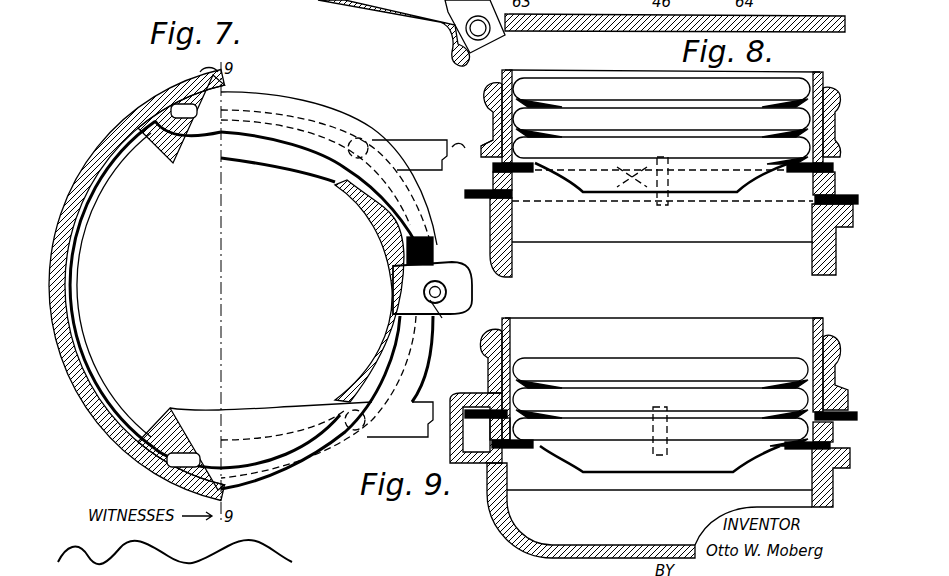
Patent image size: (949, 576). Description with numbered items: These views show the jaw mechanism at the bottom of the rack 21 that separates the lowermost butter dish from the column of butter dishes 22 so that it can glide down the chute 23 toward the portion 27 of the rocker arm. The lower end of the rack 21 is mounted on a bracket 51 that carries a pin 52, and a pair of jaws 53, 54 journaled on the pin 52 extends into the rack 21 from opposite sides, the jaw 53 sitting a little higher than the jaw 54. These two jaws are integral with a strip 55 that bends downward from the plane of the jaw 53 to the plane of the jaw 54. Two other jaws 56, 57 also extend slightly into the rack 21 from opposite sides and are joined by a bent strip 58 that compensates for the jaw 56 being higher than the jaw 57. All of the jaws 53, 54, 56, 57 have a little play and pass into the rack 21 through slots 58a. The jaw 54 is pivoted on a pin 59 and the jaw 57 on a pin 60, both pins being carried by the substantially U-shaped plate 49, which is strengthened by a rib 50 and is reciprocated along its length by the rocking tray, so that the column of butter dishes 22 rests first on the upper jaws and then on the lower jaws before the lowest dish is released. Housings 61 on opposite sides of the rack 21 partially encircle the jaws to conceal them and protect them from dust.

In FIG. 8, the rack 21 is at (815, 68).
In FIG. 9, the rack 21 is at (813, 336).
In FIG. 8, the butter dishes 22 is at (600, 82).
In FIG. 9, the butter dishes 22 is at (583, 364).
In FIG. 7, the chute 23 is at (95, 370).
In FIG. 9, the portion of rocker arm 27 is at (622, 545).
In FIG. 7, the U-shaped plate 49 is at (396, 150).
In FIG. 7, the rib 50 is at (430, 150).
In FIG. 7, the bracket 51 is at (400, 283).
In FIG. 7, the pin 52 is at (445, 320).
In FIG. 8, the pin 52 is at (668, 195).
In FIG. 9, the pin 52 is at (667, 452).
In FIG. 7, the jaw 53 is at (262, 98).
In FIG. 8, the jaw 53 is at (528, 186).
In FIG. 9, the jaw 53 is at (486, 420).
In FIG. 7, the jaw 54 is at (236, 420).
In FIG. 8, the jaw 54 is at (849, 206).
In FIG. 9, the jaw 54 is at (796, 450).
In FIG. 7, the strip 55 is at (428, 252).
In FIG. 7, the jaw 56 is at (262, 480).
In FIG. 8, the jaw 56 is at (797, 174).
In FIG. 9, the jaw 56 is at (843, 398).
In FIG. 7, the jaw 57 is at (250, 160).
In FIG. 8, the jaw 57 is at (478, 188).
In FIG. 9, the jaw 57 is at (522, 450).
In FIG. 7, the strip 58 is at (460, 296).
In FIG. 7, the slots 58a is at (125, 466).
In FIG. 9, the slots 58a is at (493, 405).
In FIG. 7, the pin 59 is at (353, 445).
In FIG. 7, the pin 60 is at (357, 138).
In FIG. 7, the housings 61 is at (209, 64).
In FIG. 8, the housings 61 is at (480, 146).